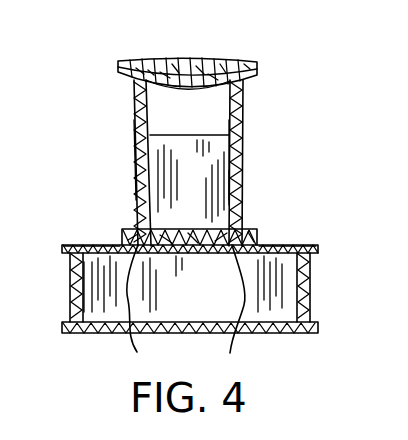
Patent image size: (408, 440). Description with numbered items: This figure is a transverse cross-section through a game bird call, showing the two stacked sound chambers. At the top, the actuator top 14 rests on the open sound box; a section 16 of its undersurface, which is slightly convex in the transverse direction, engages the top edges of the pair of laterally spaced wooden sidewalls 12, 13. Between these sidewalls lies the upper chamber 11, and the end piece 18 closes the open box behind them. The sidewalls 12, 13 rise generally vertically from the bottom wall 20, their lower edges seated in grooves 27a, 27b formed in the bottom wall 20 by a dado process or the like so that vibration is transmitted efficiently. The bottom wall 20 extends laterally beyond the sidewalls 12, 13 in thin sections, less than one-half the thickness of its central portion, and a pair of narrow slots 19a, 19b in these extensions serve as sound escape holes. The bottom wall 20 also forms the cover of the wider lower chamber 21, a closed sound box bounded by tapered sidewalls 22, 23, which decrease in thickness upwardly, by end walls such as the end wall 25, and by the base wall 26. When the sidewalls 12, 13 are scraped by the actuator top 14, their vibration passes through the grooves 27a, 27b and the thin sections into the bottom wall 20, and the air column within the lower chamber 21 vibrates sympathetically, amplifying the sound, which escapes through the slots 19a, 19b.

The upper chamber 11 is at (202, 189).
The sidewall 12 is at (244, 178).
The sidewall 13 is at (134, 168).
The actuator top 14 is at (176, 61).
The section of the undersurface of the actuator top 16 is at (191, 86).
The rear end piece 18 is at (210, 156).
The narrow slot 19a is at (283, 244).
The narrow slot 19b is at (90, 244).
The bottom wall 20 is at (308, 244).
The lower chamber 21 is at (207, 302).
The sidewall 22 is at (70, 283).
The sidewall 23 is at (310, 286).
The end wall 25 is at (110, 274).
The base wall 26 is at (320, 324).
The groove 27a is at (133, 334).
The groove 27b is at (235, 334).